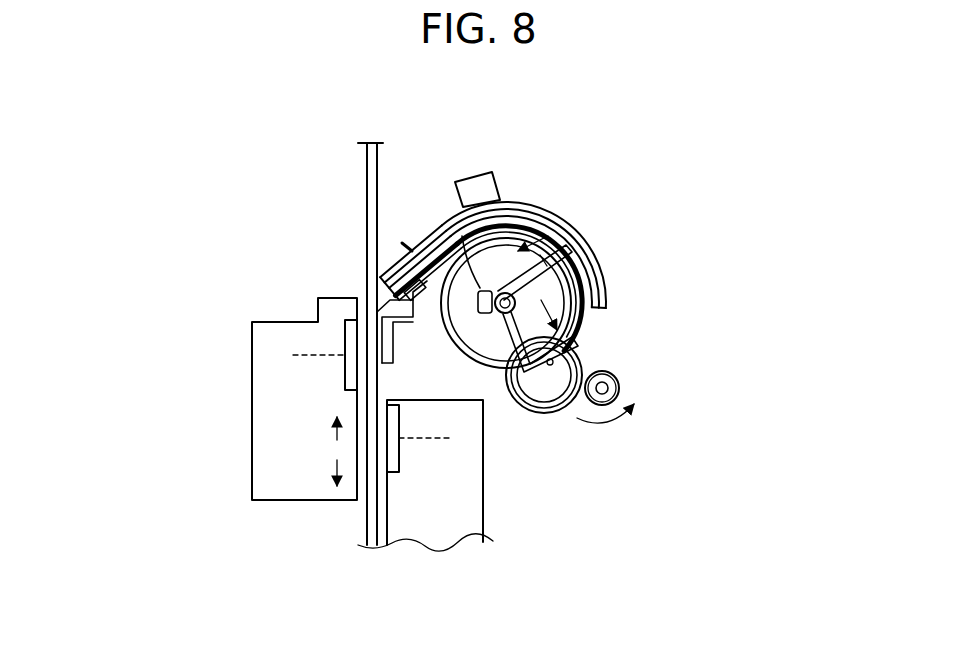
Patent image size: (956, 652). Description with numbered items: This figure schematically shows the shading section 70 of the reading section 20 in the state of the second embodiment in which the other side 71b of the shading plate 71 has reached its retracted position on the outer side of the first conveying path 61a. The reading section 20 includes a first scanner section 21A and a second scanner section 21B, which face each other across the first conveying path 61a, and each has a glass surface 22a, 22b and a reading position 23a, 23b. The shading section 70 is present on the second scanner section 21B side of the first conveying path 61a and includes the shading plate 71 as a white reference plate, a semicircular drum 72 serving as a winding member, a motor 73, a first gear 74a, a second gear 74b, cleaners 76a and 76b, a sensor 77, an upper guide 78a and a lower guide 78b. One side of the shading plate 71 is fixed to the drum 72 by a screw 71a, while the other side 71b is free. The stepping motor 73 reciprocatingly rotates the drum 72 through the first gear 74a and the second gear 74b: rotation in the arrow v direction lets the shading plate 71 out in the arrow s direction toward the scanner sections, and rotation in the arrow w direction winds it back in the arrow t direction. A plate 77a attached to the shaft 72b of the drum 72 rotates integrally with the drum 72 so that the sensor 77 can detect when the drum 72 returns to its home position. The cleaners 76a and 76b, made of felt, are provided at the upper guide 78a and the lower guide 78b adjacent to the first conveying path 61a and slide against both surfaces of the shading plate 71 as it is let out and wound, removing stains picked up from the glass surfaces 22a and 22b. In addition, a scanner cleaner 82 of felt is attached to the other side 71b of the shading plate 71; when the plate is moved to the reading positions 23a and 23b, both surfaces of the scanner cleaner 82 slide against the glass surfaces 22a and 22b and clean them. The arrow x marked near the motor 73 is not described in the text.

The reading section 20 is at (168, 419).
The first scanner section 21A is at (252, 363).
The second scanner section 21B is at (484, 490).
The glass surface 22a is at (344, 370).
The glass surface 22b is at (400, 450).
The reading position 23a is at (348, 355).
The reading position 23b is at (389, 436).
The first conveying path 61a is at (373, 510).
The shading section 70 is at (590, 164).
The shading plate 71 is at (604, 269).
The screw 71a is at (576, 356).
The other side 71b is at (422, 265).
The drum 72 is at (594, 256).
The shaft 72b is at (506, 372).
The motor 73 is at (619, 388).
The first gear 74a is at (556, 410).
The second gear 74b is at (470, 360).
The cleaner 76a is at (390, 282).
The cleaner 76b is at (411, 250).
The sensor 77 is at (470, 178).
The plate 77a is at (534, 398).
The upper guide 78a is at (427, 236).
The lower guide 78b is at (400, 321).
The scanner cleaner 82 is at (372, 282).
The arrow t direction t is at (336, 432).
The arrow s direction s is at (334, 466).
The arrow v direction v is at (565, 243).
The arrow w direction w is at (580, 318).
The direction x is at (631, 413).